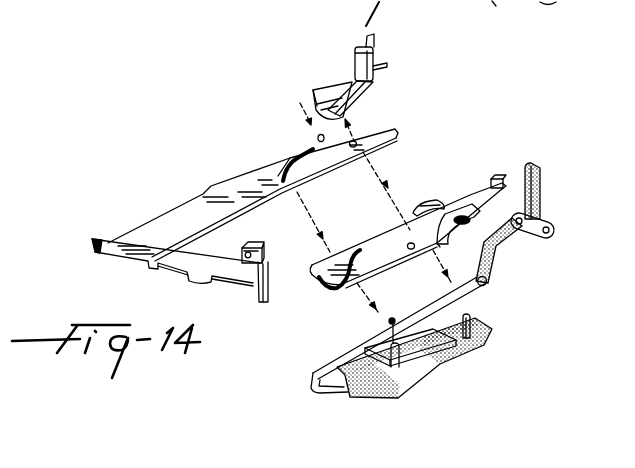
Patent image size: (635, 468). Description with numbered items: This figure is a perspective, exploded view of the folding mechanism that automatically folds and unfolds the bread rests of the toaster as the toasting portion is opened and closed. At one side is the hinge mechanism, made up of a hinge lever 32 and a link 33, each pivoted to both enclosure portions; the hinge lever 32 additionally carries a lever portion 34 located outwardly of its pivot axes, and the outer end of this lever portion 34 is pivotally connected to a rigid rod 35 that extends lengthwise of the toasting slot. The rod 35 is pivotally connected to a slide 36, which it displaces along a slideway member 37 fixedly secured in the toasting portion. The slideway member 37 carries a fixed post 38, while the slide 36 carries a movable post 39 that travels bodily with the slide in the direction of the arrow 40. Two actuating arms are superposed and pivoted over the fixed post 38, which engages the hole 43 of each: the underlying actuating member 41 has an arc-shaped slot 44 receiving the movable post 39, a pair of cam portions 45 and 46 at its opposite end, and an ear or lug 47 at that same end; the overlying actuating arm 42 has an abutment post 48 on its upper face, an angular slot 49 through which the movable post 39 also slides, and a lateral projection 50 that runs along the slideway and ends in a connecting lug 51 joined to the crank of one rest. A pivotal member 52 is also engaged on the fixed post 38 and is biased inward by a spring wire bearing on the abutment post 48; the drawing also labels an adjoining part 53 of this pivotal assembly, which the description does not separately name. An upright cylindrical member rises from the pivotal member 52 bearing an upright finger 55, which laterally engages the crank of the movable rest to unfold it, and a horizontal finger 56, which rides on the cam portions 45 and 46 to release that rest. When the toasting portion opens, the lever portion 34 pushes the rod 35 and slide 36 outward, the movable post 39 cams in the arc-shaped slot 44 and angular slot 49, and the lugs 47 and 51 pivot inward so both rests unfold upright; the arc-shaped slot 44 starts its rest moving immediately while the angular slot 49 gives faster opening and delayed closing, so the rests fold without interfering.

The hinge lever 32 is at (540, 175).
The link 33 is at (553, 222).
The lever portion 34 is at (498, 262).
The rod 35 is at (465, 287).
The slide 36 is at (362, 345).
The slideway member 37 is at (483, 347).
The fixed post 38 is at (477, 326).
The movable post 39 is at (330, 373).
The arrow 40 is at (443, 371).
The underlying actuating member 41 is at (377, 242).
The overlying actuating arm 42 is at (241, 184).
The hole 43 is at (357, 140).
The arc-shaped slot 44 is at (320, 278).
The cam portion 45 is at (432, 198).
The cam portion 46 is at (446, 235).
The ear or lug 47 is at (493, 178).
The abutment post 48 is at (315, 136).
The angular slot 49 is at (287, 160).
The lateral projection 50 is at (212, 277).
The connecting lug 51 is at (262, 250).
The pivotal member 52 is at (320, 88).
The arm 53 is at (372, 101).
The upright finger 55 is at (378, 42).
The horizontal finger 56 is at (388, 66).